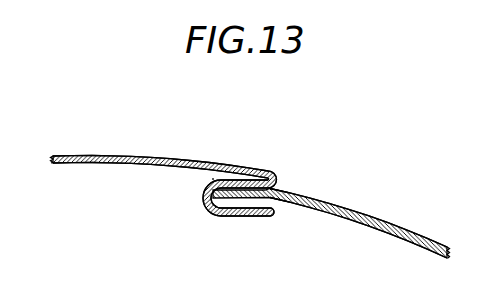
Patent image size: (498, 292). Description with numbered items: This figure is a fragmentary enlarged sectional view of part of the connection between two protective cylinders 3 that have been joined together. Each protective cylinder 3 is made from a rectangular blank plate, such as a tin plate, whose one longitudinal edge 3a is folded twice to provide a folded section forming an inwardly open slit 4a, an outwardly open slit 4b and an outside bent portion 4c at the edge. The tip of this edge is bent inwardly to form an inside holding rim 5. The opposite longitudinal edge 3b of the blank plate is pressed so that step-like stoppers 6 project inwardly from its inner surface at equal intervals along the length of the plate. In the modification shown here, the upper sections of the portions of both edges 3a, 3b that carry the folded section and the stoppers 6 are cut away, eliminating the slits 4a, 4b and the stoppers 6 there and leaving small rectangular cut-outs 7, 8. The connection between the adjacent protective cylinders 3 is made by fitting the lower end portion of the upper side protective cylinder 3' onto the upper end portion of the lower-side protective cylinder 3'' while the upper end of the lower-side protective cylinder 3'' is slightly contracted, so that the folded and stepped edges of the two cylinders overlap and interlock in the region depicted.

The protective cylinder 3 is at (250, 182).
The upper side protective cylinder 3' is at (250, 168).
The lower-side protective cylinder 3'' is at (250, 219).
The longitudinal edge 3a is at (236, 165).
The opposite longitudinal edge 3b is at (283, 190).
The inwardly open slit 4a is at (248, 178).
The outwardly open slit 4b is at (218, 208).
The outside bent portion 4c is at (276, 184).
The inside holding rim 5 is at (257, 209).
The step-like stopper 6 is at (242, 201).
The cut-out 7 is at (212, 172).
The cut-out 8 is at (279, 200).